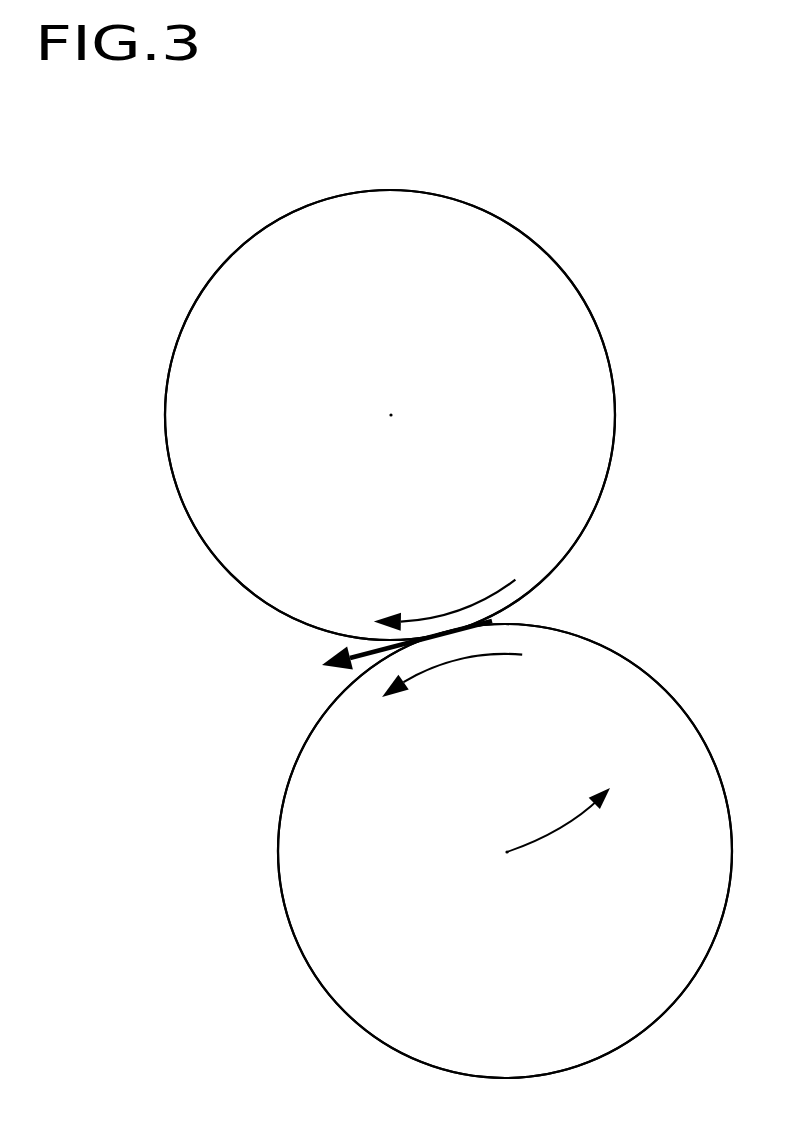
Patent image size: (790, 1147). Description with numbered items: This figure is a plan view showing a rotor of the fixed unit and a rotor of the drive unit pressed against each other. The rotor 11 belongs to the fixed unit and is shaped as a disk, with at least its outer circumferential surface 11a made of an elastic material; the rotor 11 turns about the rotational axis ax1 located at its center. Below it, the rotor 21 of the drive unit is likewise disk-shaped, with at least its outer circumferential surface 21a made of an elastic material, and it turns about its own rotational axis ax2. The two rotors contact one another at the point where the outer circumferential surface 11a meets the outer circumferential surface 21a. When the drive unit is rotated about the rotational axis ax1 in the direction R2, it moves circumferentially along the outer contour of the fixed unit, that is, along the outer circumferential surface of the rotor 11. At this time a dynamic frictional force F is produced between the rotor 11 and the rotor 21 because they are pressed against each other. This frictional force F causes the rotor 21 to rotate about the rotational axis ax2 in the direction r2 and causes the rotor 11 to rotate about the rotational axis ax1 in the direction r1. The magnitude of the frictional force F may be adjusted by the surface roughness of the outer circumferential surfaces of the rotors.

The rotor 11 is at (217, 297).
The outer circumferential surface 11a is at (598, 487).
The rotor 21 is at (330, 852).
The outer circumferential surface 21a is at (612, 645).
The rotational axis ax1 is at (392, 436).
The rotational axis ax2 is at (504, 872).
The direction r1 is at (445, 603).
The direction r2 is at (452, 680).
The direction R2 is at (578, 807).
The frictional force F is at (397, 653).